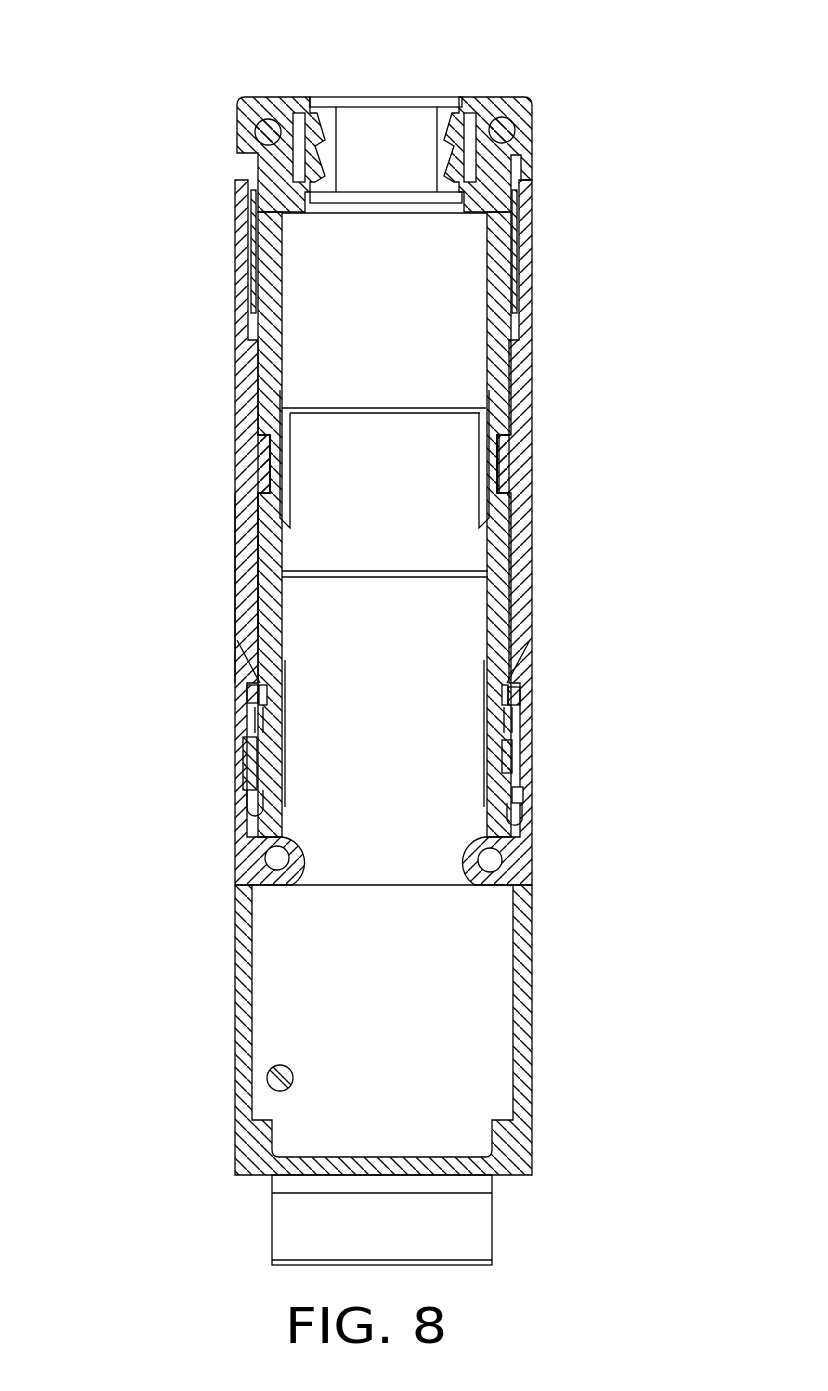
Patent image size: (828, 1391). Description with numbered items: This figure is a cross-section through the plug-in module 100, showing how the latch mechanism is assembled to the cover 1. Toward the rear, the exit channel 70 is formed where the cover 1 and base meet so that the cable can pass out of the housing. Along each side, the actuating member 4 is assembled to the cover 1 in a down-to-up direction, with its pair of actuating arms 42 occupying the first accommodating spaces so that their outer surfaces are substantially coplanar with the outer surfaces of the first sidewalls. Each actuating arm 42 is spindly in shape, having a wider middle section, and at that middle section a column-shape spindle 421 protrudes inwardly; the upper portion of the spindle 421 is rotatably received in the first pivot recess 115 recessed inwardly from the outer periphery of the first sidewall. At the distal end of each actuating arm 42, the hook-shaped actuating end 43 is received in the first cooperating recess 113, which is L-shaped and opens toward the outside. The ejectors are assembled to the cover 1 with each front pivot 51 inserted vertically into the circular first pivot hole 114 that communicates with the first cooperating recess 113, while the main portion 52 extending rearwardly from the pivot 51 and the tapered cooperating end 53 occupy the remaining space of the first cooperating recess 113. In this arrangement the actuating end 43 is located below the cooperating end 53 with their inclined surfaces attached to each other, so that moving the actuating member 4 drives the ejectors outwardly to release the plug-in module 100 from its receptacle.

The plug-in module 100 is at (378, 39).
The cover 1 is at (505, 112).
The exit channel 70 is at (390, 155).
The actuating member 4 is at (235, 337).
The actuating arm 42 is at (248, 603).
The spindle 421 is at (267, 463).
The first pivot recess 115 is at (258, 433).
The actuating end 43 is at (258, 707).
The first cooperating recess 113 is at (247, 723).
The cooperating end 53 is at (252, 725).
The main portion 52 is at (508, 760).
The first pivot hole 114 is at (518, 800).
The pivot 51 is at (520, 817).